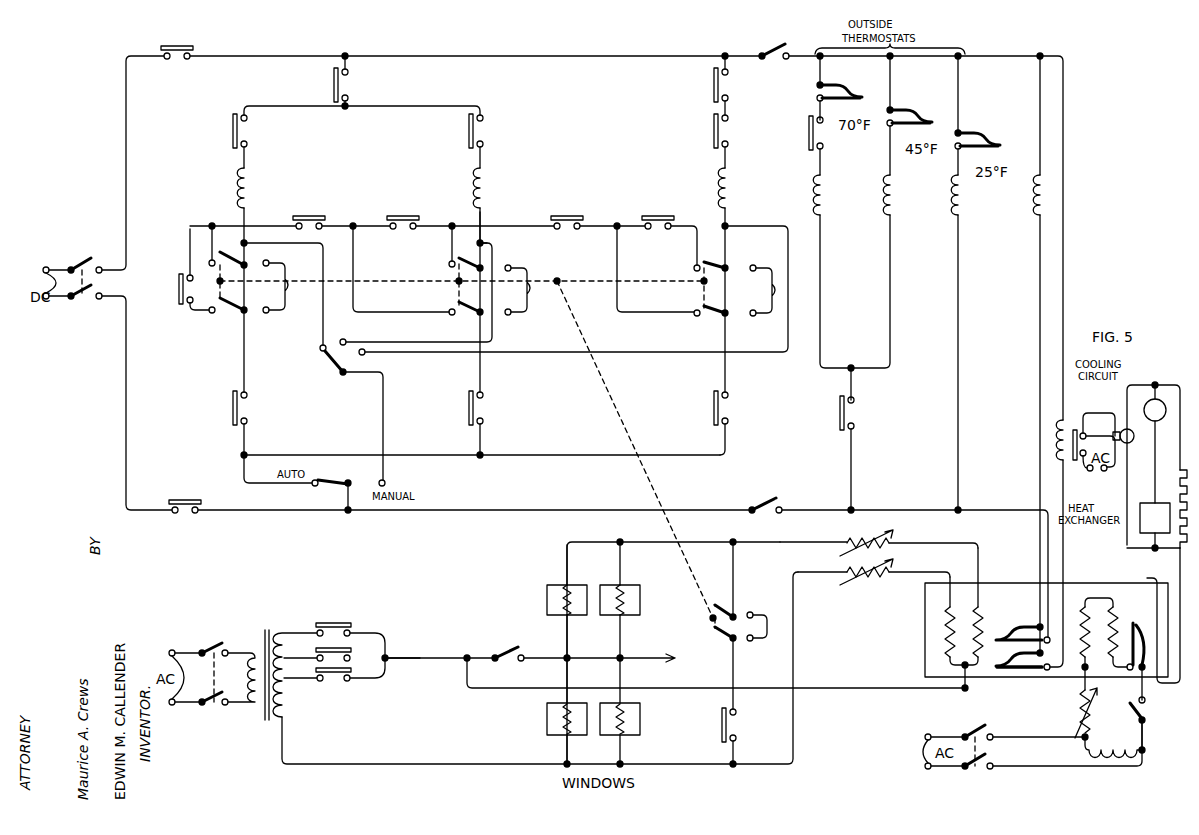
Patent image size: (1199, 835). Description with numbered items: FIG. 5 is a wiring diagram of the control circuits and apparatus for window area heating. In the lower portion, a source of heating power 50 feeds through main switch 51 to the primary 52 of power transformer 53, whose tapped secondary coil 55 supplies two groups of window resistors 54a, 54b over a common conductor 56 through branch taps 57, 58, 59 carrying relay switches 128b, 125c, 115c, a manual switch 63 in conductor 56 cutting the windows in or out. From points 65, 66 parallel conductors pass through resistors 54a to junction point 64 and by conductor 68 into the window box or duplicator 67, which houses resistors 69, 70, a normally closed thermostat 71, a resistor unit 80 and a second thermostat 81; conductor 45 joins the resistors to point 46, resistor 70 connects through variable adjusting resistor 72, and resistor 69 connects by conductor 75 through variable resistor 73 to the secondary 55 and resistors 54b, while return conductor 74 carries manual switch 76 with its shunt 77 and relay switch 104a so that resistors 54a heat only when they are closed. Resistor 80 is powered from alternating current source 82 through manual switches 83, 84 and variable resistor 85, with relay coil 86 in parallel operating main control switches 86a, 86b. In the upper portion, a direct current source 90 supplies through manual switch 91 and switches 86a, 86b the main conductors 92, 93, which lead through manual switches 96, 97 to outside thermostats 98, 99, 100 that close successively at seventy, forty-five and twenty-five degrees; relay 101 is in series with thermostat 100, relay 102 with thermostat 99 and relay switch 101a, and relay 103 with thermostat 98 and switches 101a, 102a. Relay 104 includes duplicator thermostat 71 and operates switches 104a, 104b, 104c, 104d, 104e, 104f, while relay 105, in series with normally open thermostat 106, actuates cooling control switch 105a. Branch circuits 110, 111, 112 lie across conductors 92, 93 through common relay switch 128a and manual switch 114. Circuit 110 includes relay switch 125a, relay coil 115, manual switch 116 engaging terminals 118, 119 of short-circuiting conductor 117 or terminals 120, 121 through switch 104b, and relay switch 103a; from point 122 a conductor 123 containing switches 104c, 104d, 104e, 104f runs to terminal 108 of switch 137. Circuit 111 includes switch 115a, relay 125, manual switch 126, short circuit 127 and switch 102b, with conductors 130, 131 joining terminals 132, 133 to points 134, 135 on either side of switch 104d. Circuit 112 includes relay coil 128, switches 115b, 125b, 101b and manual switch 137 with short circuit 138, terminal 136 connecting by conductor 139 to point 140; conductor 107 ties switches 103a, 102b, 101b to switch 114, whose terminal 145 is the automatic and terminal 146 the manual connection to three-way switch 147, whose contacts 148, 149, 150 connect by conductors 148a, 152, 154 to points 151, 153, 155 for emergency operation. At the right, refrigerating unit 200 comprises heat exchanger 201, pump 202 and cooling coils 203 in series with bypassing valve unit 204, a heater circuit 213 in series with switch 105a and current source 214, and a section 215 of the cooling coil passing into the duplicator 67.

The conductor 45 is at (825, 690).
The point 46 is at (478, 652).
The source of heating power 50 is at (170, 653).
The main switch 51 is at (197, 648).
The primary 52 is at (231, 655).
The heating or power transformer 53 is at (270, 621).
The window heating resistors 54a is at (621, 592).
The window heating resistors 54b is at (640, 709).
The secondary coil 55 is at (283, 632).
The common conductor 56 is at (419, 656).
The branch tapped circuit 57 is at (370, 634).
The branch tapped circuit 58 is at (389, 643).
The branch tapped circuit 59 is at (385, 684).
The manual switch 63 is at (512, 650).
The junction point 64 is at (620, 540).
The point 65 is at (568, 656).
The point 66 is at (621, 656).
The window box or duplicator 67 is at (1084, 578).
The conductor 68 is at (750, 548).
The resistor 69 is at (945, 628).
The resistor 70 is at (980, 620).
The fixed temperature thermostat 71 is at (1025, 620).
The variable adjusting resistor 72 is at (849, 538).
The variable resistor 73 is at (858, 582).
The return conductor 74 is at (738, 600).
The conductor 75 is at (652, 762).
The manual switch 76 is at (714, 636).
The shunt 77 is at (755, 615).
The resistor unit 80 is at (1088, 657).
The fixed temperature thermostat 81 is at (1134, 621).
The alternating current source 82 is at (927, 734).
The manual switch 83 is at (975, 725).
The manual switch 84 is at (1145, 703).
The variable resistor 85 is at (1080, 708).
The relay coil 86 is at (1095, 748).
The relay switch 86a is at (166, 50).
The relay switch 86b is at (176, 504).
The source of direct current 90 is at (48, 258).
The manual switch 91 is at (90, 262).
The main conductor 92 is at (495, 56).
The main conductor 93 is at (487, 510).
The manual switch 96 is at (760, 48).
The manual switch 97 is at (758, 501).
The fixed temperature thermostat 98 is at (843, 104).
The fixed temperature thermostat 99 is at (900, 130).
The fixed temperature thermostat 100 is at (979, 152).
The relay 101 is at (963, 204).
The relay switch 101a is at (839, 403).
The relay switch 101b is at (714, 406).
The relay 102 is at (895, 195).
The relay switch 102a is at (808, 134).
The relay switch 102b is at (469, 406).
The relay 103 is at (825, 195).
The relay switch 103a is at (233, 406).
The relay 104 is at (1036, 193).
The relay switch 104a is at (722, 715).
The relay switch 104b is at (182, 295).
The relay switch 104c is at (293, 222).
The relay switch 104d is at (383, 222).
The relay switch 104e is at (554, 222).
The relay switch 104f is at (648, 222).
The relay 105 is at (1058, 442).
The relay switch 105a is at (1075, 429).
The fixed temperature thermostat 106 is at (1001, 672).
The conductor 107 is at (490, 455).
The terminal 108 is at (694, 268).
The branch circuit 110 is at (253, 161).
The branch circuit 111 is at (492, 159).
The parallel circuit 112 is at (735, 169).
The manual switch 114 is at (322, 479).
The relay coil 115 is at (250, 187).
The relay switch 115a is at (470, 134).
The relay switch 115b is at (718, 90).
The relay switch 115c is at (320, 684).
The manual switch 116 is at (238, 318).
The short-circuiting conductor 117 is at (284, 286).
The terminal 118 is at (265, 262).
The terminal 119 is at (263, 313).
The terminal 120 is at (190, 262).
The terminal 121 is at (211, 313).
The point 122 is at (212, 225).
The conductor 123 is at (506, 222).
The relay 125 is at (470, 190).
The relay switch 125a is at (238, 132).
The relay switch 125b is at (718, 134).
The relay switch 125c is at (341, 621).
The manual switch 126 is at (469, 245).
The short circuit 127 is at (531, 302).
The relay coil 128 is at (722, 190).
The relay switch 128a is at (333, 76).
The relay switch 128b is at (323, 622).
The conductor 130 is at (452, 263).
The conductor 131 is at (356, 263).
The terminal 132 is at (449, 266).
The terminal 133 is at (452, 316).
The point 134 is at (353, 224).
The point 135 is at (452, 225).
The terminal 136 is at (696, 317).
The manual switch 137 is at (706, 282).
The short circuit 138 is at (778, 264).
The conductor 139 is at (618, 263).
The point 140 is at (617, 224).
The terminal 145 is at (312, 485).
The terminal 146 is at (386, 483).
The three-way manual switch 147 is at (340, 376).
The contact 148 is at (321, 351).
The conductor 148a is at (306, 250).
The switch contact 149 is at (350, 335).
The terminal 150 is at (363, 349).
The point 151 is at (242, 249).
The conductor 152 is at (495, 336).
The point 153 is at (487, 247).
The conductor 154 is at (526, 355).
The point 155 is at (728, 226).
The refrigerating unit 200 is at (1115, 538).
The heat exchanger 201 is at (1146, 505).
The pump 202 is at (1158, 438).
The cooling coils 203 is at (1176, 550).
The bypassing valve unit 204 is at (1128, 450).
The circuit 213 is at (1100, 424).
The current source 214 is at (1093, 471).
The section of cooling coil 215 is at (1149, 580).